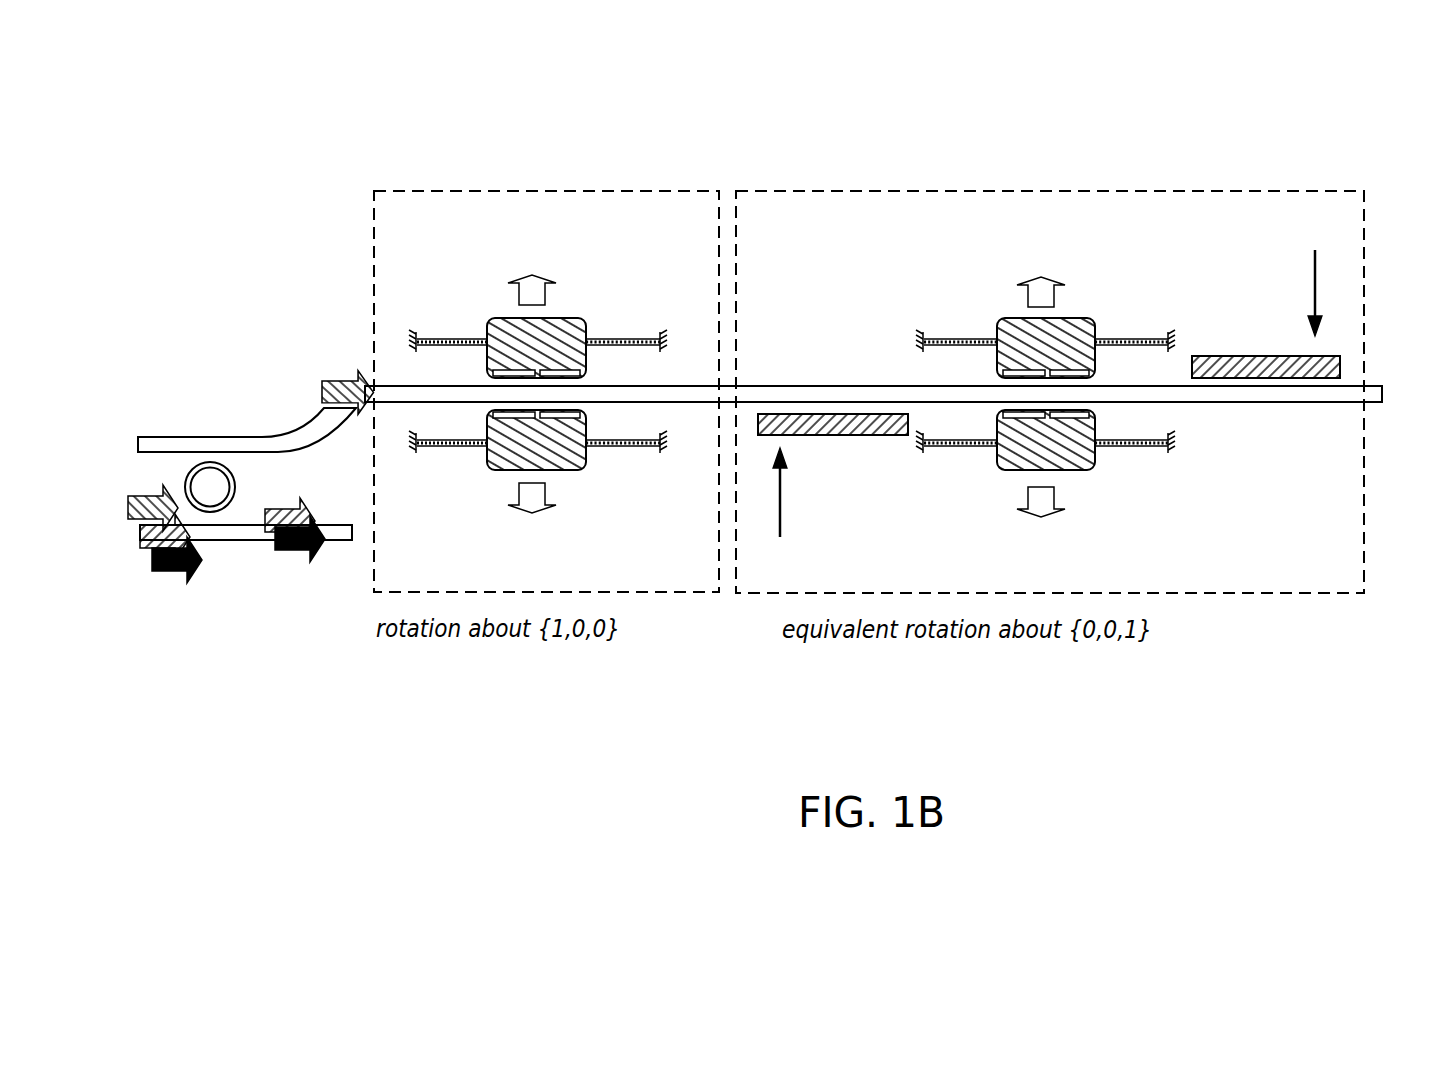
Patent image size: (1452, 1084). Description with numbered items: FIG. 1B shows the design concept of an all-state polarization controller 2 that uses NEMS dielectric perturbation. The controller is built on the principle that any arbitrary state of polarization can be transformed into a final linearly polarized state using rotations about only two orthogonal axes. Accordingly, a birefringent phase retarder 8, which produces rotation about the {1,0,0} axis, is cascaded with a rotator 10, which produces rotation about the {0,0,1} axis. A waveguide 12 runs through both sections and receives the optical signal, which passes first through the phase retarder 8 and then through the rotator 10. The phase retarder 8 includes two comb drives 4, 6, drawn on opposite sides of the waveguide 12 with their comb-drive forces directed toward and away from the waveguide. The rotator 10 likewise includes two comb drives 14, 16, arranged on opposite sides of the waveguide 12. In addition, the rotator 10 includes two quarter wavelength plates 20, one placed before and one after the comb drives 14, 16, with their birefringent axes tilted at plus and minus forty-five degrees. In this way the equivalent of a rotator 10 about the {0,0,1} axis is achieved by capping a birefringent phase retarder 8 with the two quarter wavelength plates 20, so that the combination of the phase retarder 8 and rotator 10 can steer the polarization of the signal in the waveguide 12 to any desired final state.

The all-state polarization controller 2 is at (197, 93).
The comb drive 4 is at (490, 323).
The comb drive 6 is at (488, 456).
The birefringent phase retarder 8 is at (363, 126).
The rotator 10 is at (1412, 262).
The waveguide 12 is at (733, 386).
The comb drive 14 is at (997, 324).
The comb drive 16 is at (998, 458).
The quarter wavelength plate 20 is at (837, 438).